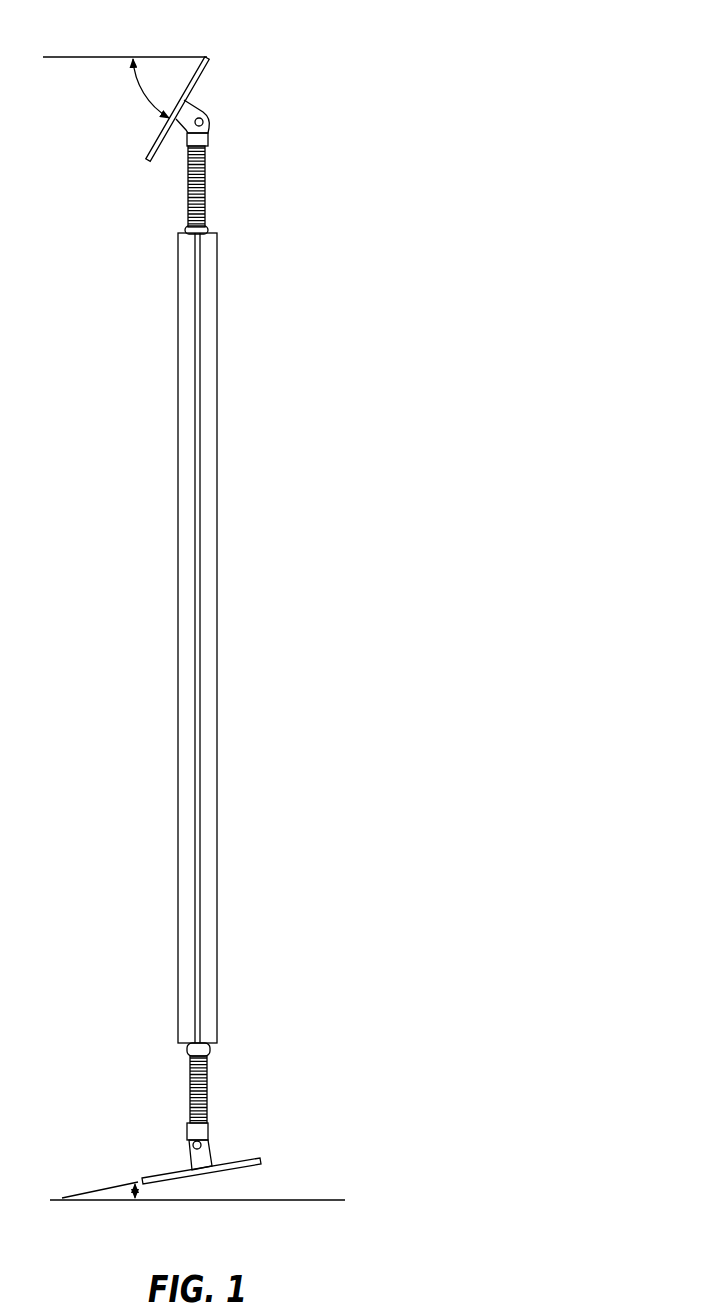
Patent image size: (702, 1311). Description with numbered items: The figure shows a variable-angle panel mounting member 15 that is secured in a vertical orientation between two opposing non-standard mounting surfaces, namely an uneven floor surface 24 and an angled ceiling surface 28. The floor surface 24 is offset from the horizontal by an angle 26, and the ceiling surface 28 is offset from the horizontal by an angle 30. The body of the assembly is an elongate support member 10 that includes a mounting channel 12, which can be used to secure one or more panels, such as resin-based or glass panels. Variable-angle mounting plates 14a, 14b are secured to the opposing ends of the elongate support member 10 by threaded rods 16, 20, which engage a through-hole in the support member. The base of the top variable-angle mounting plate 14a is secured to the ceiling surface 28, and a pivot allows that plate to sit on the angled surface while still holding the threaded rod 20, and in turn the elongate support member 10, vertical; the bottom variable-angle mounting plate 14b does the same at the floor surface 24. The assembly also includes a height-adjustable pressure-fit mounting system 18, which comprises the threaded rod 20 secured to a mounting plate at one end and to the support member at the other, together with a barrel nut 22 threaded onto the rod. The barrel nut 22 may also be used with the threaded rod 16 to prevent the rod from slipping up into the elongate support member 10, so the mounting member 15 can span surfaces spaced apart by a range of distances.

The elongate support member 10 is at (210, 576).
The mounting channel 12 is at (198, 453).
The top variable-angle mounting plate 14a is at (216, 97).
The bottom variable-angle mounting plate 14b is at (223, 1138).
The variable-angle panel mounting member 15 is at (297, 612).
The threaded rod 16 is at (208, 1077).
The pressure-fit mounting system 18 is at (222, 197).
The threaded rod 20 is at (207, 165).
The barrel nut 22 is at (187, 228).
The floor surface 24 is at (249, 1165).
The angle 26 is at (137, 1191).
The ceiling surface 28 is at (146, 161).
The angle 30 is at (148, 103).